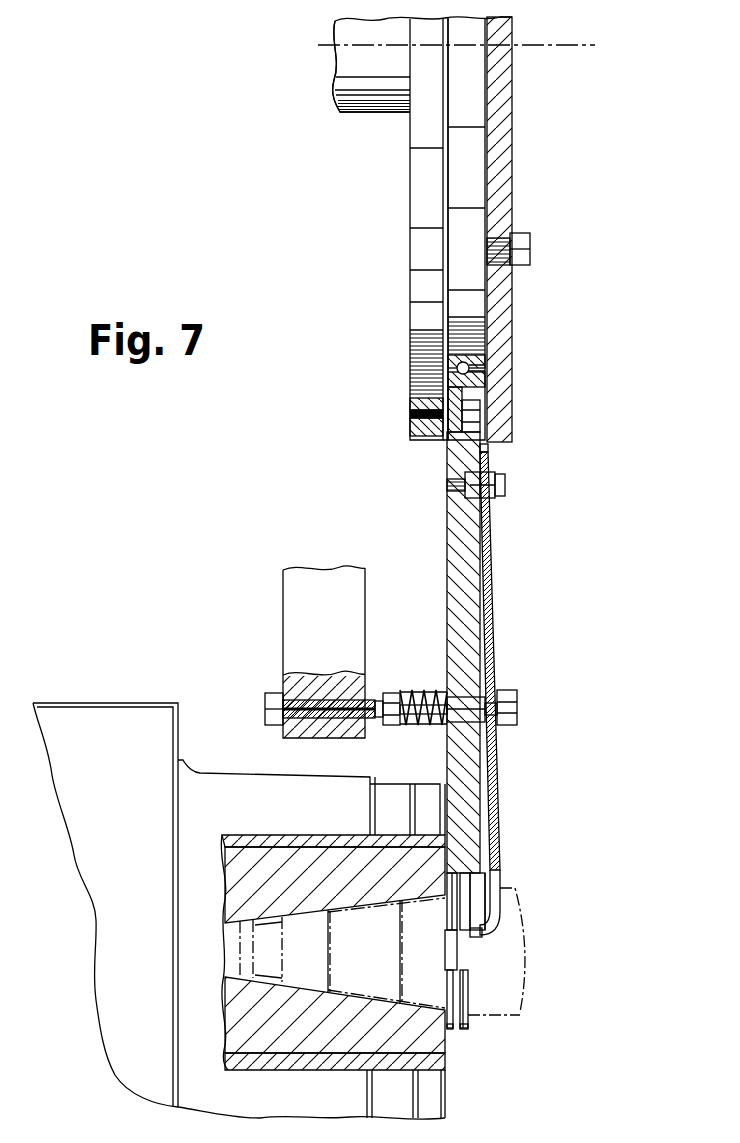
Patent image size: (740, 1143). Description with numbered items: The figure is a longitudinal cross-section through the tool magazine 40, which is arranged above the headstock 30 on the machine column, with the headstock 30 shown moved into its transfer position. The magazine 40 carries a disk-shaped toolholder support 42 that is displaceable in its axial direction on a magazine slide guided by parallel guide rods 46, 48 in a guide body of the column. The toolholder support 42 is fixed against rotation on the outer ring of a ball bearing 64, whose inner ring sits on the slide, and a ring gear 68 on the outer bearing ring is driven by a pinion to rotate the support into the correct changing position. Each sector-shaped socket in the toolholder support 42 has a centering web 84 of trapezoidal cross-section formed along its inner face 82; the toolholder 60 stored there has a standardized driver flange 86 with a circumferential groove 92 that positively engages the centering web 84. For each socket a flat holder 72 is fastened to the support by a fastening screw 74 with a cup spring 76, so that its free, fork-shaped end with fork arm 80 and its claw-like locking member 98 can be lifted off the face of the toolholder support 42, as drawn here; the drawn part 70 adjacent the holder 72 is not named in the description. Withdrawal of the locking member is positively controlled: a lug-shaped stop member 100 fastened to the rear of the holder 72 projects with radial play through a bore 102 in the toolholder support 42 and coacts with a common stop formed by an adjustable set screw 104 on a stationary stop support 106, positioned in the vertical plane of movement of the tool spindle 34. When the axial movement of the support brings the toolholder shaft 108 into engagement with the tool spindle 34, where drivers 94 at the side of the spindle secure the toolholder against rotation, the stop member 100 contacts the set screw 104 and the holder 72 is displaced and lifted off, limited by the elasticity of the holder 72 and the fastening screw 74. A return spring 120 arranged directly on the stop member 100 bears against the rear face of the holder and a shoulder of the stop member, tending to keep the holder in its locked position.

The headstock 30 is at (133, 690).
The tool spindle 34 is at (435, 845).
The magazine 40 is at (548, 310).
The toolholder support 42 is at (452, 526).
The guide rod 46 is at (355, 90).
The guide rod 48 is at (371, 66).
The toolholder 60 is at (522, 1026).
The ball bearing 64 is at (478, 368).
The ring gear 68 is at (418, 443).
The leaf spring 70 is at (505, 640).
The holder 72 is at (495, 770).
The fastening screw 74 is at (497, 478).
The cup spring 76 is at (492, 502).
The fork arm 80 is at (498, 898).
The inner face 82 is at (470, 884).
The centering web 84 is at (482, 930).
The driver flange 86 is at (468, 1030).
The circumferential groove 92 is at (452, 1030).
The driver 94 is at (452, 957).
The locking member 98 is at (480, 936).
The stop member 100 is at (408, 690).
The bore 102 is at (440, 722).
The set screw 104 is at (328, 724).
The stop support 106 is at (300, 614).
The toolholder shaft 108 is at (383, 960).
The return spring 120 is at (427, 692).